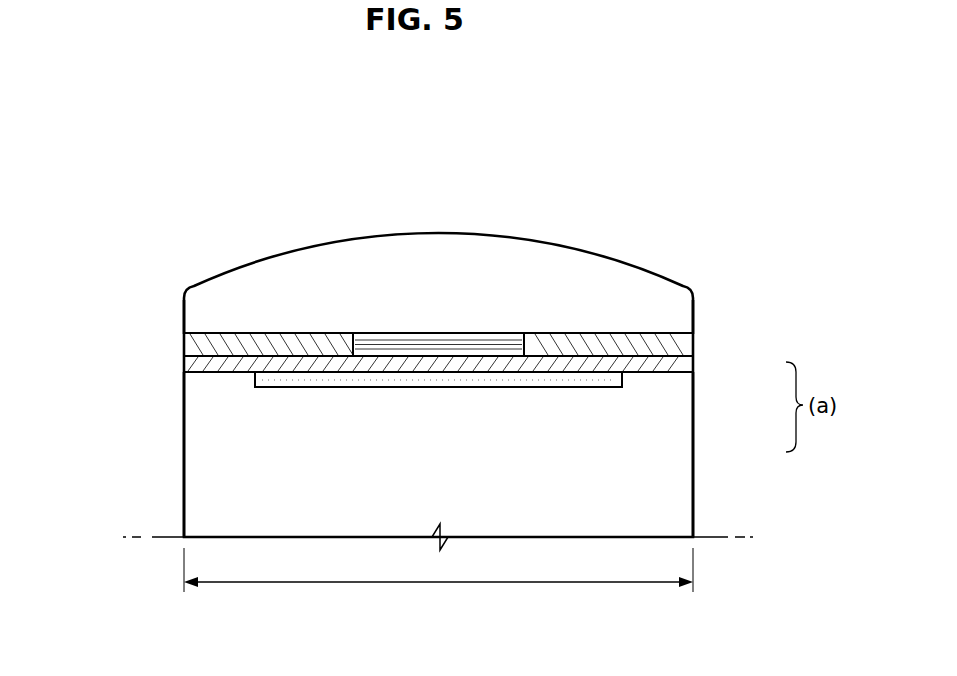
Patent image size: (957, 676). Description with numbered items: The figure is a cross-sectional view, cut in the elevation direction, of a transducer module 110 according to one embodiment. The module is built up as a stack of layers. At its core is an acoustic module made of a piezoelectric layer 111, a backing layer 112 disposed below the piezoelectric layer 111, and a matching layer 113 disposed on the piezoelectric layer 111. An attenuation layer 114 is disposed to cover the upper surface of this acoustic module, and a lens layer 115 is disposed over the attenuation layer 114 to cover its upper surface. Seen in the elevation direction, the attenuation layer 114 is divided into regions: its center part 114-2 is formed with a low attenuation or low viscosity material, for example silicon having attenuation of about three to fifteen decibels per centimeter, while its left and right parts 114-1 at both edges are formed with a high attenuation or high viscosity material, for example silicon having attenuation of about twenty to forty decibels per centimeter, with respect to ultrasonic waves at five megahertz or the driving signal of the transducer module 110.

The transducer module 110 is at (274, 170).
The piezoelectric layer 111 is at (623, 380).
The backing layer 112 is at (672, 452).
The matching layer 113 is at (688, 363).
The attenuation layer 114 is at (84, 283).
The left and right parts of the attenuation layer 114-1 is at (193, 343).
The center part of the attenuation layer 114-2 is at (376, 333).
The lens layer 115 is at (658, 287).